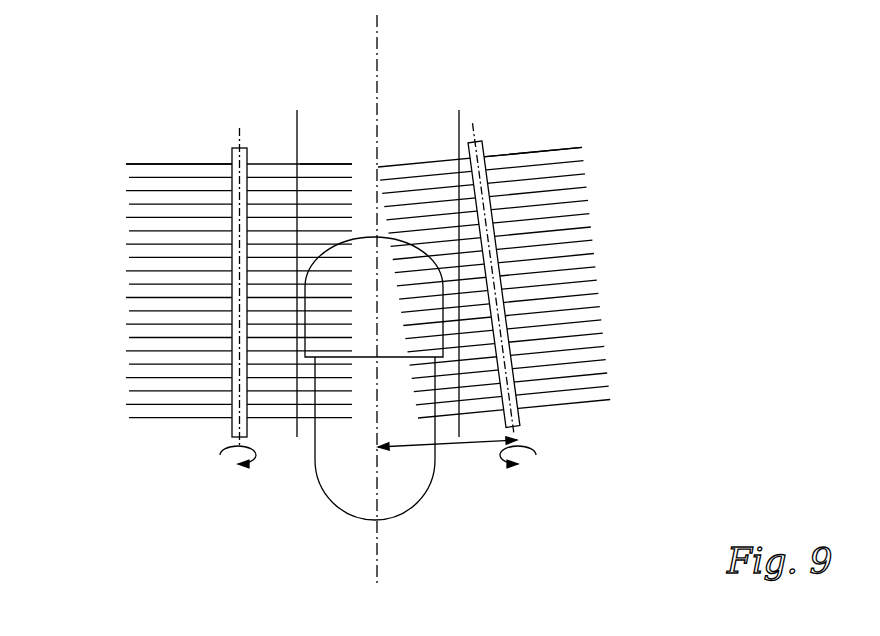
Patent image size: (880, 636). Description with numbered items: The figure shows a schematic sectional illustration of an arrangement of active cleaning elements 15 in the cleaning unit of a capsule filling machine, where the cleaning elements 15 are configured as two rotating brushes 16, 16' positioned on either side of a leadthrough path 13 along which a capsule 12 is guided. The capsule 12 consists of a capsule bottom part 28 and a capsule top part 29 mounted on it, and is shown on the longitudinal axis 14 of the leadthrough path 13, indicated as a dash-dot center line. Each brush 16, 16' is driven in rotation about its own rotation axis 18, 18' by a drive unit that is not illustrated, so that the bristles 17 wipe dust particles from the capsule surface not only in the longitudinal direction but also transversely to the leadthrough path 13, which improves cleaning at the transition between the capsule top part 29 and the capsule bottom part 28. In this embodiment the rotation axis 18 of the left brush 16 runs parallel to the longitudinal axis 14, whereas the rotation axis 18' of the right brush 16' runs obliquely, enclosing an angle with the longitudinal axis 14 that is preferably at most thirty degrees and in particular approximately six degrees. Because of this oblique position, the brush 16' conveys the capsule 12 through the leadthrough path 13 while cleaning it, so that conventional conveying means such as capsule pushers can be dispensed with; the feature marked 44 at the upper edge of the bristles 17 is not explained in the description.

The capsule 12 is at (473, 412).
The leadthrough path 13 is at (289, 115).
The longitudinal axis 14 is at (377, 100).
The active cleaning elements 15 is at (375, 284).
The rotating brush 16 is at (179, 114).
The rotating brush 16' is at (535, 108).
The bristles 17 is at (185, 163).
The rotation axis 18 is at (221, 246).
The rotation axis 18' is at (503, 242).
The capsule bottom part 28 is at (328, 503).
The capsule top part 29 is at (443, 343).
The upper edge 44 is at (353, 163).